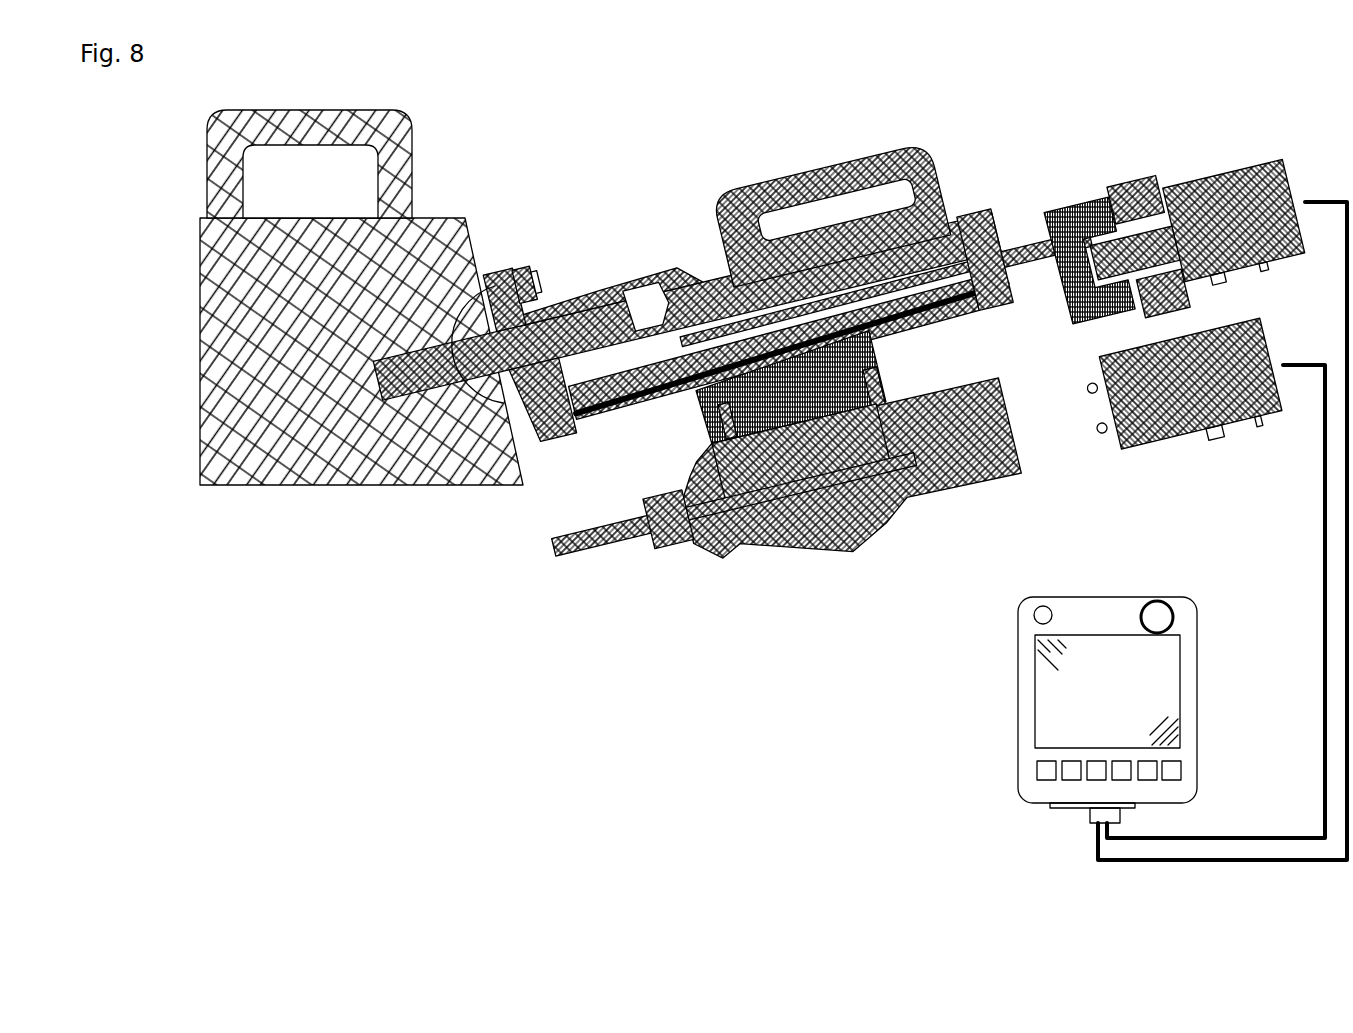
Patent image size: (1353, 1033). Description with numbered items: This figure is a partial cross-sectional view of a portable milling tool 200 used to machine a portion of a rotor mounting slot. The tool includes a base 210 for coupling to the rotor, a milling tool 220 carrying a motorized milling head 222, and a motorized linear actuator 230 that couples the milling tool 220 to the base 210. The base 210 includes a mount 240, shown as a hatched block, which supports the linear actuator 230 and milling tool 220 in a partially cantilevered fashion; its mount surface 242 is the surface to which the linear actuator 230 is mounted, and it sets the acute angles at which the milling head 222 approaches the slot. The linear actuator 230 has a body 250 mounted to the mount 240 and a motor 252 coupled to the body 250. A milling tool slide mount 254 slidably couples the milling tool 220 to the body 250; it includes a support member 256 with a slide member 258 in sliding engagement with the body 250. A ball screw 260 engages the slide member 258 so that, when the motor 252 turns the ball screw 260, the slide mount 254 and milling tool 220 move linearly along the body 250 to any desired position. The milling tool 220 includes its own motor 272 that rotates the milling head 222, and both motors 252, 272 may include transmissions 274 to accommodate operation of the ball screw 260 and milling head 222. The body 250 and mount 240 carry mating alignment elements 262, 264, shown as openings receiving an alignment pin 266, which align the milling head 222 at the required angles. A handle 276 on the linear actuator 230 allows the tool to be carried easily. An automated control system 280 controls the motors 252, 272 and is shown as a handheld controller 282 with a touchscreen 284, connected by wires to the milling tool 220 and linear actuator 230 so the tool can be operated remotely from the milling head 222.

The milling tool 200 is at (568, 199).
The base 210 is at (358, 100).
The milling tool 220 is at (851, 481).
The motorized milling head 222 is at (621, 531).
The motorized linear actuator 230 is at (1029, 249).
The mount 240 is at (245, 265).
The mount surface 242 is at (432, 355).
The body 250 is at (773, 340).
The motor 252 is at (1194, 234).
The milling tool slide mount 254 is at (784, 491).
The support member 256 is at (790, 391).
The slide member 258 is at (791, 348).
The ball screw 260 is at (955, 290).
The alignment element 262 is at (687, 306).
The alignment element 264 is at (606, 336).
The alignment pin 266 is at (527, 284).
The motor 272 is at (1183, 391).
The transmission 274 is at (1039, 329).
The handle 276 is at (831, 215).
The automated control system 280 is at (1146, 531).
The handheld controller 282 is at (1045, 797).
The touchscreen 284 is at (1125, 704).